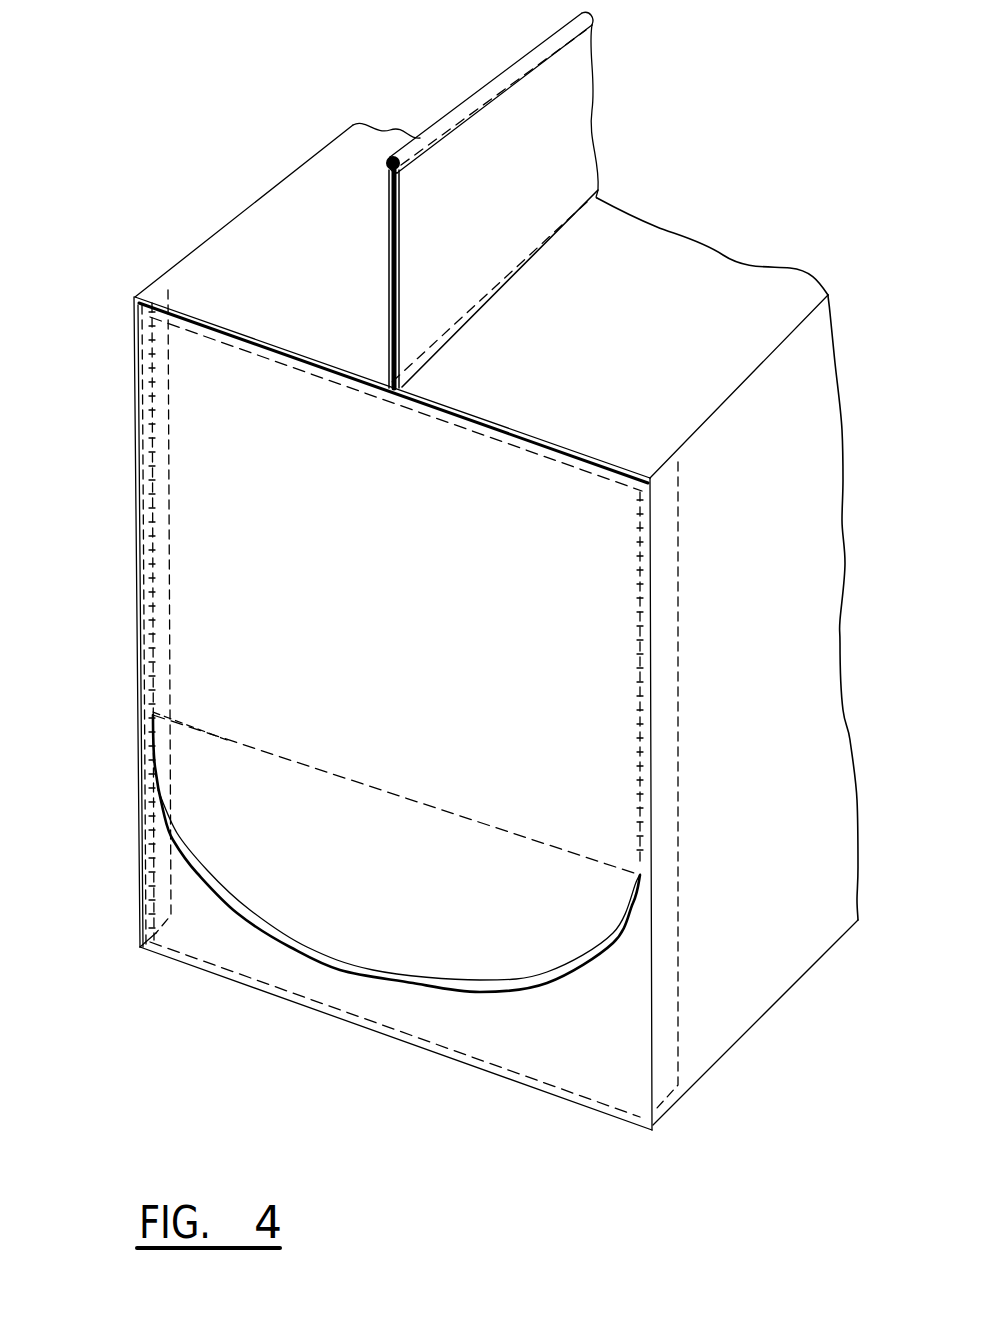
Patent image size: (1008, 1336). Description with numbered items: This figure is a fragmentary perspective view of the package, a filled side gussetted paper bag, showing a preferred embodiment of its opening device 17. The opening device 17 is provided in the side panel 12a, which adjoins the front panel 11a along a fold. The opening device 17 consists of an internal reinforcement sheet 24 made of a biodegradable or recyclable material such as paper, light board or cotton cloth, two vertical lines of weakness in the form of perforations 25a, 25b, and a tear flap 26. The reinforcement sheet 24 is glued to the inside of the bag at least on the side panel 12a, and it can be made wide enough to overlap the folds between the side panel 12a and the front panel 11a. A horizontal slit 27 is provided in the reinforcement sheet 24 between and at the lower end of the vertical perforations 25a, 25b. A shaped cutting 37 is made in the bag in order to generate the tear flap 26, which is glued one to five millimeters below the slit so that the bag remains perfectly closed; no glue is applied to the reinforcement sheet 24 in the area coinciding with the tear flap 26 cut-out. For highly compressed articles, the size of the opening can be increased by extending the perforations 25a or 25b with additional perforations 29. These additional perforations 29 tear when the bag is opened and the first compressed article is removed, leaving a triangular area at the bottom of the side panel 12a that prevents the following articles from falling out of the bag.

The front panel 11a is at (729, 1015).
The side panel 12a is at (540, 1092).
The opening device 17 is at (208, 590).
The internal reinforcement sheet 24 is at (200, 683).
The perforations 25a is at (152, 468).
The perforations 25b is at (653, 548).
The tear flap 26 is at (207, 808).
The horizontal slit 27 is at (227, 740).
The additional perforations 29 is at (157, 927).
The shaped cutting 37 is at (345, 963).